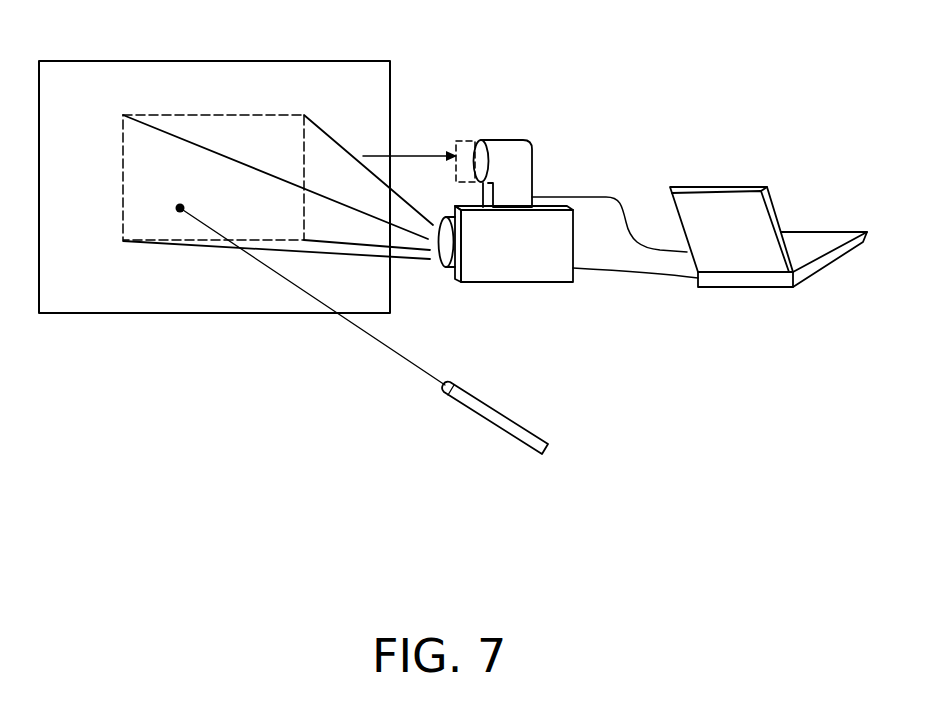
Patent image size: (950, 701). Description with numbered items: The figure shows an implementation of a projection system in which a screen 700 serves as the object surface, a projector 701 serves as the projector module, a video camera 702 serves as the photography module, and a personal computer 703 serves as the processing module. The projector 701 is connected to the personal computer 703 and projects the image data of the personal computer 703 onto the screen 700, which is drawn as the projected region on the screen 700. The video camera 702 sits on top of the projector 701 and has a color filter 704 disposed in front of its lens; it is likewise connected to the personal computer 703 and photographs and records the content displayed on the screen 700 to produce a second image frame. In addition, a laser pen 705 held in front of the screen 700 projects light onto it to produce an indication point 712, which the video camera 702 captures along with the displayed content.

The screen 700 is at (280, 59).
The projector 701 is at (537, 283).
The video camera 702 is at (513, 139).
The personal computer 703 is at (733, 288).
The color filter 704 is at (460, 120).
The laser pen 705 is at (498, 428).
The indication point 712 is at (178, 213).